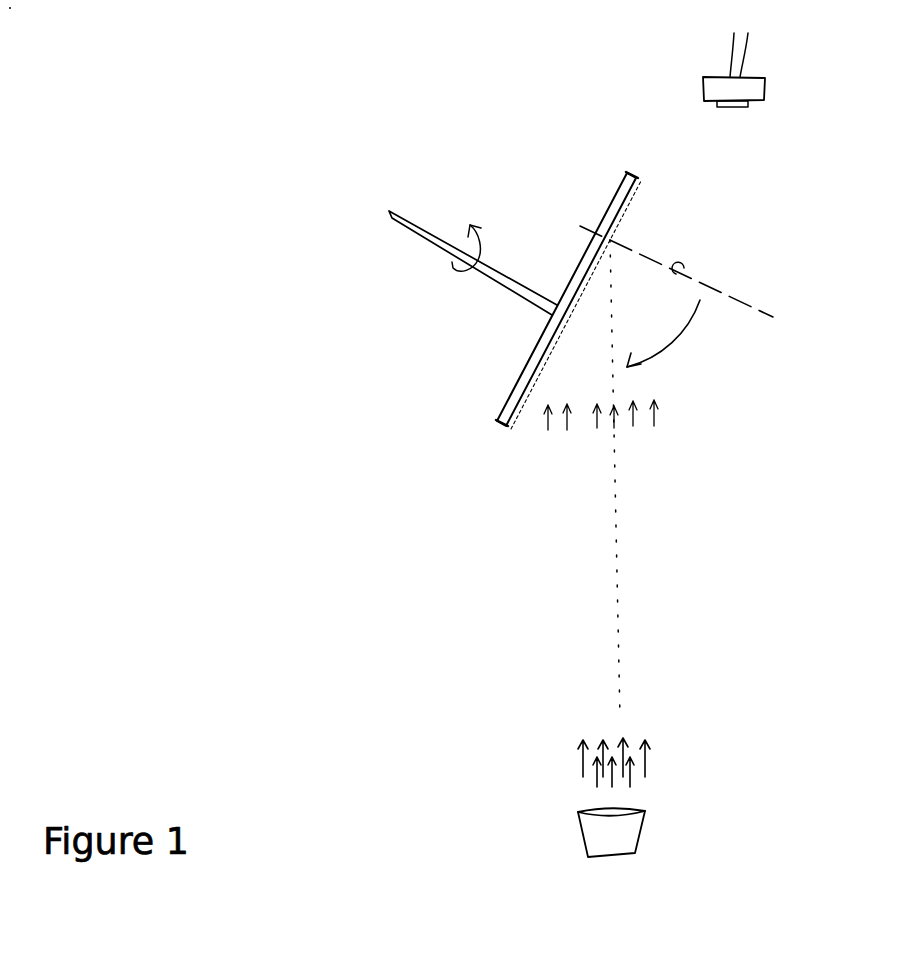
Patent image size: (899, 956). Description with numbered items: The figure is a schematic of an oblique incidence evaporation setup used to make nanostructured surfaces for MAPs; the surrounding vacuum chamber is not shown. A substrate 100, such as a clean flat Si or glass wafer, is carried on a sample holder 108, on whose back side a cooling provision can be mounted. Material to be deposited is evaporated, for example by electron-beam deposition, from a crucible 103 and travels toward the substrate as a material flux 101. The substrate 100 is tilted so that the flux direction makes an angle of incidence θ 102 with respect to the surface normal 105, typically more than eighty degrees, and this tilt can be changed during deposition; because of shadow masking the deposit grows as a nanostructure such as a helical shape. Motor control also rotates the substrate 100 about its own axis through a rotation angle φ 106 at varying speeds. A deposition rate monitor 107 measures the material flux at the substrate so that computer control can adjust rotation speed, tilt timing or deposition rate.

The substrate 100 is at (515, 427).
The material flux 101 is at (672, 397).
The angle of incidence θ 102 is at (657, 297).
The crucible 103 is at (650, 832).
The surface normal 105 is at (735, 285).
The rotation angle φ 106 is at (477, 213).
The deposition rate monitor 107 is at (770, 88).
The sample holder 108 is at (517, 380).